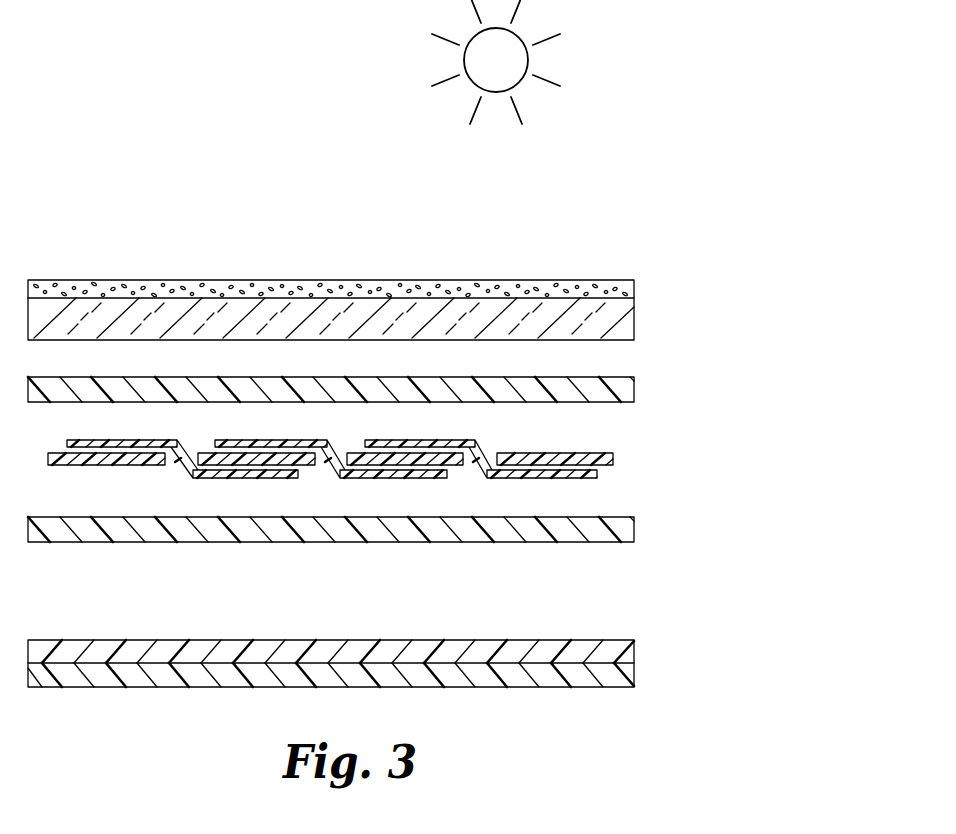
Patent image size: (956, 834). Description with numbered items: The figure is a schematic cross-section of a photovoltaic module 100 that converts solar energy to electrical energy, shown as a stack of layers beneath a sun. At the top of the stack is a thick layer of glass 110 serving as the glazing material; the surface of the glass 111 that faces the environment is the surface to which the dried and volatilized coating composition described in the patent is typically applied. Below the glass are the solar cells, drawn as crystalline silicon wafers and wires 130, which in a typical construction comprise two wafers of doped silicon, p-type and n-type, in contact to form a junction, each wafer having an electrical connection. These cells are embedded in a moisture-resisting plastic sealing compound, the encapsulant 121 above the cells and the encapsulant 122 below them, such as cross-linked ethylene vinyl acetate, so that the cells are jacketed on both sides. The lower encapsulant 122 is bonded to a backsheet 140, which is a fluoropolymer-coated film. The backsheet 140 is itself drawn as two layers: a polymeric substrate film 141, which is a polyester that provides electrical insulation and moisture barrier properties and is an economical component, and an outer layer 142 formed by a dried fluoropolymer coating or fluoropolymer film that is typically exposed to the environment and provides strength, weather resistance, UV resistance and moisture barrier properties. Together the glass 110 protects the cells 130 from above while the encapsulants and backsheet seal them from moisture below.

The photovoltaic module 100 is at (584, 194).
The glass 110 is at (623, 320).
The surface of glass 111 is at (372, 287).
The encapsulant compound 121 is at (623, 392).
The encapsulant compound 122 is at (620, 530).
The crystalline silicon wafers and wires 130 is at (603, 460).
The backsheet 140 is at (628, 630).
The polymeric substrate film 141 is at (542, 650).
The outer layer 142 is at (590, 677).